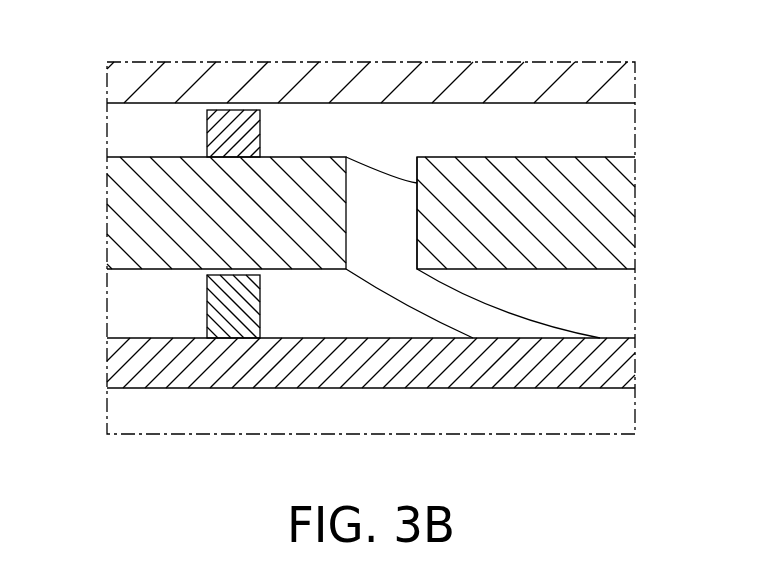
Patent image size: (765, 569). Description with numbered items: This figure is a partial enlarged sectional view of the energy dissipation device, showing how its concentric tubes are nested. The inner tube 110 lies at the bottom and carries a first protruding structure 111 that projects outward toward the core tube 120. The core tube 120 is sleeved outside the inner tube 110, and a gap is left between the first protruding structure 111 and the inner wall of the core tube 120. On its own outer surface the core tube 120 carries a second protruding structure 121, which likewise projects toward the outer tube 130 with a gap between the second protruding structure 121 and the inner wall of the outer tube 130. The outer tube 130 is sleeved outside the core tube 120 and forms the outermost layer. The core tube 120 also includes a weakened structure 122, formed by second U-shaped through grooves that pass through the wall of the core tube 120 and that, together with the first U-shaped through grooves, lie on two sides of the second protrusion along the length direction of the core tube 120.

The inner tube 110 is at (113, 363).
The first protruding structure 111 is at (213, 303).
The core tube 120 is at (113, 198).
The second protruding structure 121 is at (215, 136).
The weakened structure 122 is at (417, 217).
The outer tube 130 is at (113, 80).